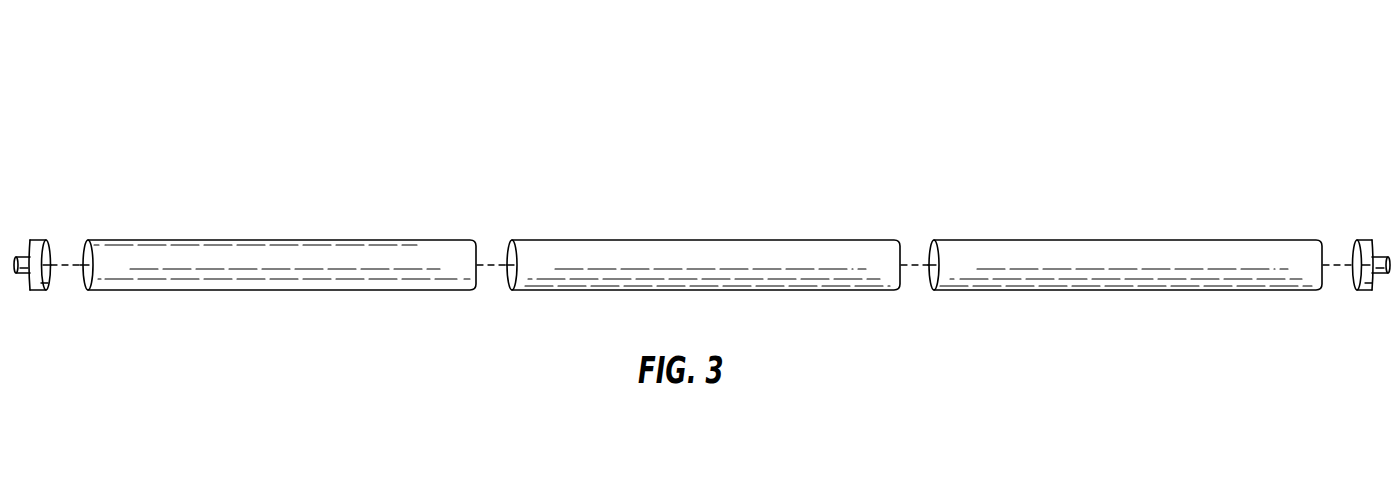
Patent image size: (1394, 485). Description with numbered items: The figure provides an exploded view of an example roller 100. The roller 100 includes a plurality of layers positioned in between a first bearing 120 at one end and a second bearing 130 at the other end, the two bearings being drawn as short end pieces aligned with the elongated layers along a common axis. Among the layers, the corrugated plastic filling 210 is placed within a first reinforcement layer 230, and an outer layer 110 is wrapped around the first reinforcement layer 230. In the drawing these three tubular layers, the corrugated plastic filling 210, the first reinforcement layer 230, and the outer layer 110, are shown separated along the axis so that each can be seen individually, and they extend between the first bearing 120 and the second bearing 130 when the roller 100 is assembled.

The roller 100 is at (134, 84).
The outer layer 110 is at (1101, 253).
The first bearing 120 is at (43, 243).
The second bearing 130 is at (1365, 243).
The corrugated plastic filling 210 is at (254, 253).
The first reinforcement layer 230 is at (677, 253).